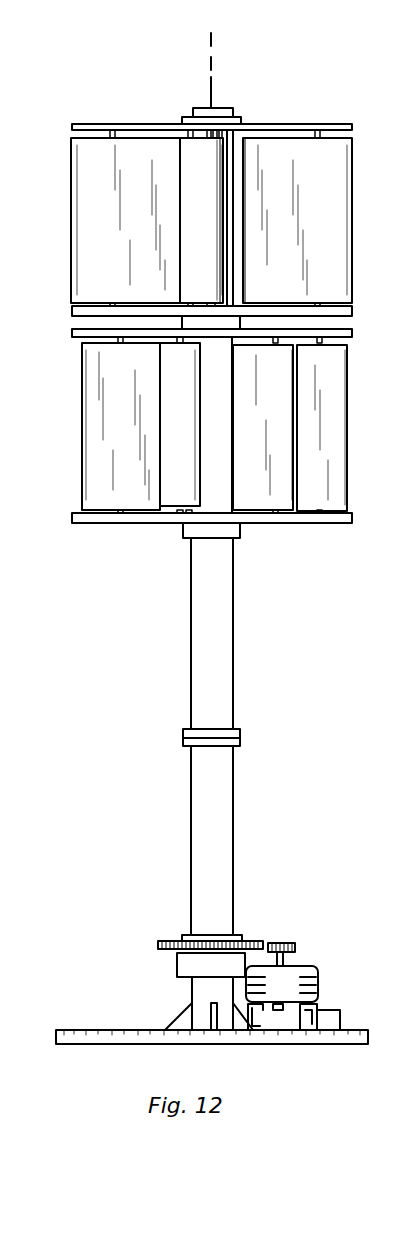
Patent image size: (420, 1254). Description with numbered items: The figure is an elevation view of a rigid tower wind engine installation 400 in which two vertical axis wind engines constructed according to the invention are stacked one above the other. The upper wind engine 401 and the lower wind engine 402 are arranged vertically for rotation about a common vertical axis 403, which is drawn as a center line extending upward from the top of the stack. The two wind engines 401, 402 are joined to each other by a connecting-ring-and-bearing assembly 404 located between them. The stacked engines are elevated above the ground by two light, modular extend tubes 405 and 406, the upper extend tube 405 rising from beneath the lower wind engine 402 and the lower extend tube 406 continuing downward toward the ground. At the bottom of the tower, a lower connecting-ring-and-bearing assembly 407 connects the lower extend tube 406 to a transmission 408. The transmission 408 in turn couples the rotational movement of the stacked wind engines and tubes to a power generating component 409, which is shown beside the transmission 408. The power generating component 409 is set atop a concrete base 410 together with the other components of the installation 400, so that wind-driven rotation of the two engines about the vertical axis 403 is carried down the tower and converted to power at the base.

The wind engine installation 400 is at (91, 58).
The wind engine 401 is at (72, 126).
The wind engine 402 is at (72, 333).
The vertical axis 403 is at (213, 43).
The connecting-ring-and-bearing assembly 404 is at (200, 320).
The extend tube 405 is at (203, 638).
The extend tube 406 is at (207, 823).
The lower connecting-ring-and-bearing assembly 407 is at (207, 937).
The transmission 408 is at (193, 972).
The power generating component 409 is at (307, 968).
The concrete base 410 is at (133, 1030).